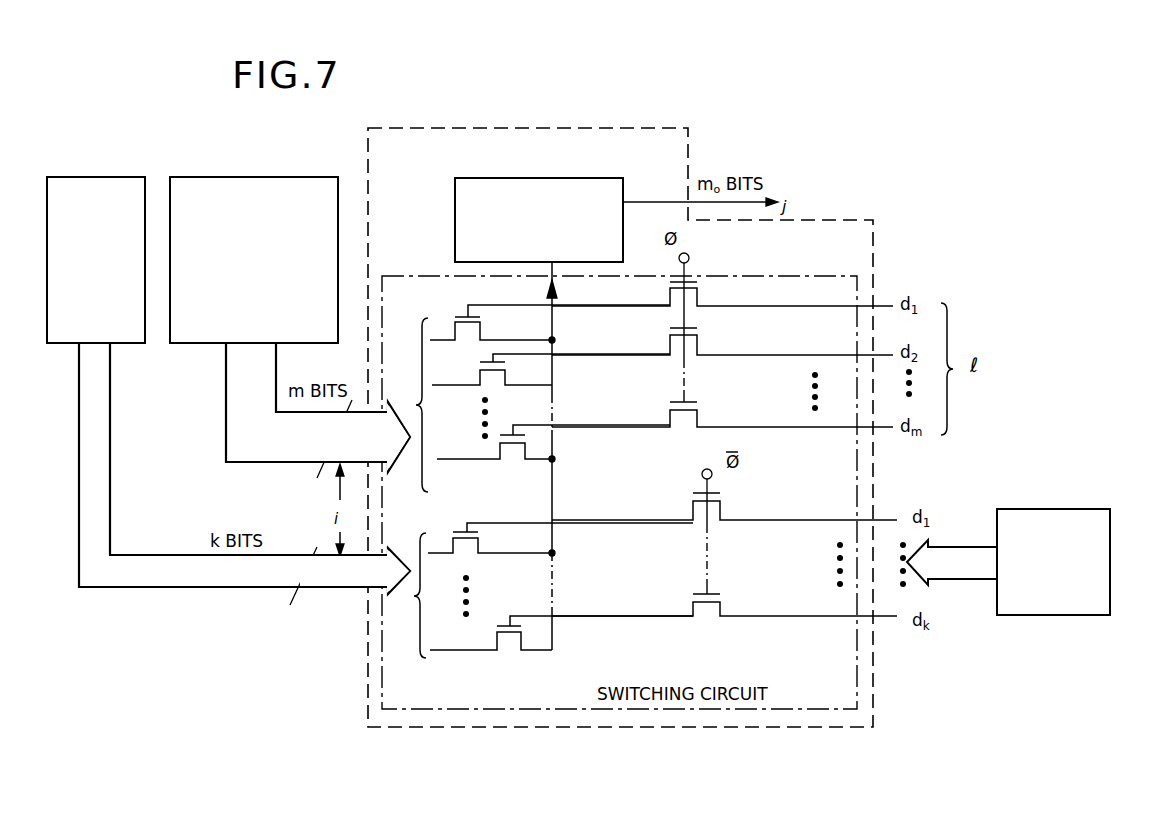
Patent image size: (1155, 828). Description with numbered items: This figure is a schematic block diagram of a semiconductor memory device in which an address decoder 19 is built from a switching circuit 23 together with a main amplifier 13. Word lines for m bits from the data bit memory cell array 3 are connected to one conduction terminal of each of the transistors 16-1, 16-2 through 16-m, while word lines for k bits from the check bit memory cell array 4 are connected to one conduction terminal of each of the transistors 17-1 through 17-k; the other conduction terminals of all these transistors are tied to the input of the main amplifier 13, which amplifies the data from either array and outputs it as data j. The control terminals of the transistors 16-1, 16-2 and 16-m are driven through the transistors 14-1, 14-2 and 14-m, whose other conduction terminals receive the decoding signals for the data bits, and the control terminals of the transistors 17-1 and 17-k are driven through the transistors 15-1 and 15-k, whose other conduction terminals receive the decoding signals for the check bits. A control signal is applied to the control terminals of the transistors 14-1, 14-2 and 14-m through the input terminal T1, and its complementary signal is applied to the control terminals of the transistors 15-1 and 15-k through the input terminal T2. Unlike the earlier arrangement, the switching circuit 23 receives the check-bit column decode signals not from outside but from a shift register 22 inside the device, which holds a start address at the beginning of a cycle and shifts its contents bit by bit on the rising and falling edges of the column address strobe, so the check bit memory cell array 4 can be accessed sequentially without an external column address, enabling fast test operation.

The data bit memory cell array 3 is at (118, 177).
The check bit memory cell array 4 is at (293, 177).
The main amplifier 13 is at (583, 178).
The transistor 14-1 is at (700, 300).
The transistor 14-2 is at (700, 347).
The transistor 14-m is at (700, 419).
The transistor 15-1 is at (722, 512).
The transistor 15-k is at (722, 607).
The transistor 16-1 is at (483, 334).
The transistor 16-2 is at (505, 380).
The transistor 16-m is at (517, 463).
The transistor 17-1 is at (480, 545).
The transistor 17-k is at (497, 640).
The address decoder 19 is at (876, 684).
The shift register 22 is at (1043, 509).
The switching circuit 23 is at (822, 276).
The input terminal T1 is at (698, 253).
The input terminal T2 is at (701, 474).